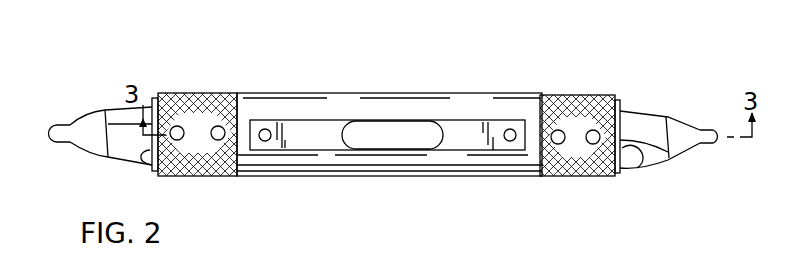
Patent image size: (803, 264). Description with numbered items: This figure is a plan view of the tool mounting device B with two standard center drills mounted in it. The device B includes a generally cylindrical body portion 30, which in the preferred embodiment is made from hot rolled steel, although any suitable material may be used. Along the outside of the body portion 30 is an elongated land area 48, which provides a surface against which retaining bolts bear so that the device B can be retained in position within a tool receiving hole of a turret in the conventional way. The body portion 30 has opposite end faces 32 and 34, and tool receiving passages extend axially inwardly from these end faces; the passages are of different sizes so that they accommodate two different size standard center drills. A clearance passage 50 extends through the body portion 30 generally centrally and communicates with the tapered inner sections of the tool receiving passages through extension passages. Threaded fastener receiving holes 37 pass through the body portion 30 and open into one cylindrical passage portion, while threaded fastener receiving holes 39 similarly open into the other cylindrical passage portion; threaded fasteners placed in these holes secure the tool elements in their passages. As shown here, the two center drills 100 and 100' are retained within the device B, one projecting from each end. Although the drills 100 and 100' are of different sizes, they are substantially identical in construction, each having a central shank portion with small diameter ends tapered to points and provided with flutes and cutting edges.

The body portion 30 is at (416, 182).
The end face 32 is at (156, 97).
The end face 34 is at (640, 150).
The threaded fastener receiving holes 37 is at (180, 127).
The threaded fastener receiving holes 39 is at (592, 131).
The elongated land area 48 is at (308, 135).
The clearance passage 50 is at (392, 128).
The center drill 100 is at (668, 117).
The center drill 100' is at (101, 155).
The tool mounting device B is at (457, 56).